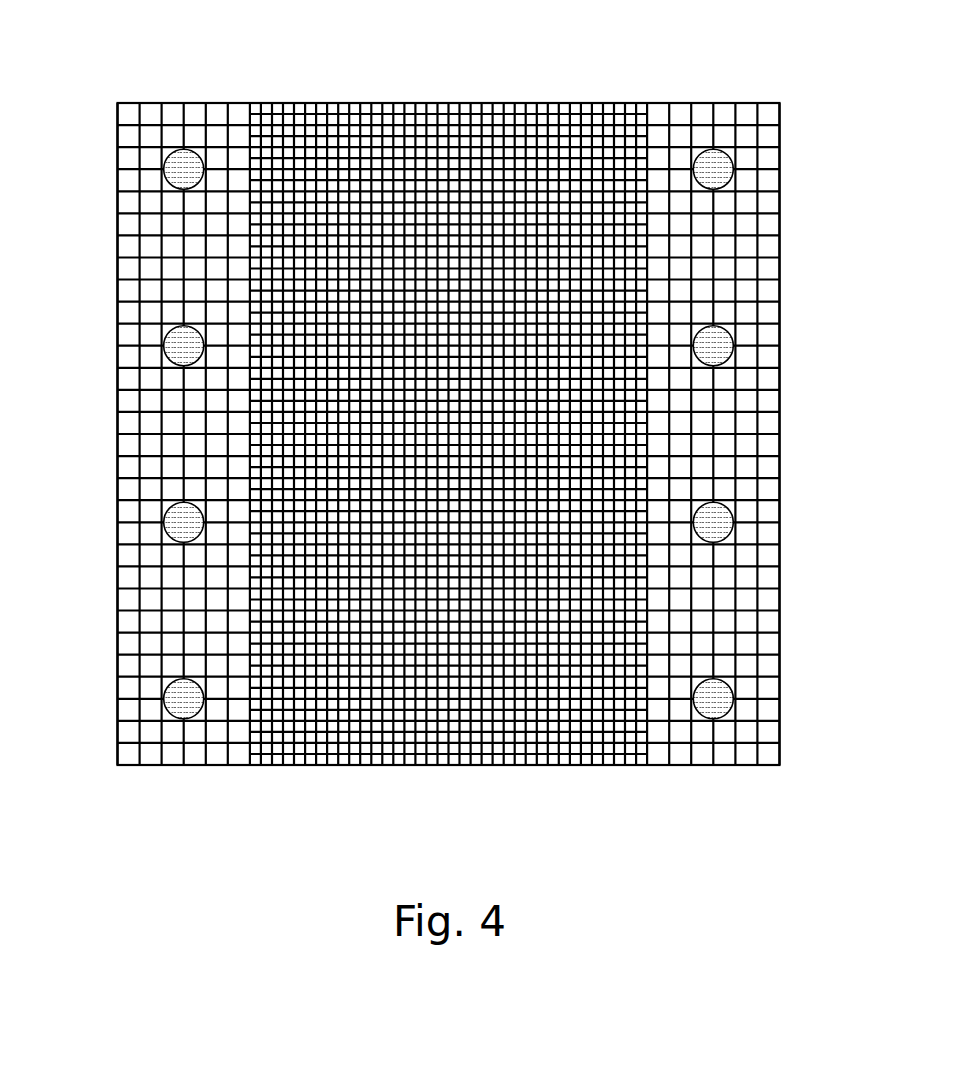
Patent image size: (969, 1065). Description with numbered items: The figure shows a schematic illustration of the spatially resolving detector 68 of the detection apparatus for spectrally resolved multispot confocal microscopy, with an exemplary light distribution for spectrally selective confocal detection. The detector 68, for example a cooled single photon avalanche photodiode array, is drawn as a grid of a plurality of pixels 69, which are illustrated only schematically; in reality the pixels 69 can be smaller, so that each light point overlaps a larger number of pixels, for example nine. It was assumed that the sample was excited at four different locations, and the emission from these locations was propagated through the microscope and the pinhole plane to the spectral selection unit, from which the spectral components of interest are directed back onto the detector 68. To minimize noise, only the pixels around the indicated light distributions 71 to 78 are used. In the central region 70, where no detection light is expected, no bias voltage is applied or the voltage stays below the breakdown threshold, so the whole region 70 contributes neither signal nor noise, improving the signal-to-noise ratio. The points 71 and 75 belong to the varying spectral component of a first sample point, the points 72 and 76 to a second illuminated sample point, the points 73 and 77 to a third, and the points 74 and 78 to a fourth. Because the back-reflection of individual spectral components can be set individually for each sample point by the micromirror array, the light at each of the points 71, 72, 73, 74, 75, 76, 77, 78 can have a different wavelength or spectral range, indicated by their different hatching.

The spatially resolving detector 68 is at (483, 791).
The pixels 69 is at (725, 118).
The central region 70 is at (352, 125).
The light distribution 71 is at (182, 170).
The light distribution 72 is at (182, 347).
The light distribution 73 is at (182, 524).
The light distribution 74 is at (182, 699).
The light distribution 75 is at (714, 169).
The light distribution 76 is at (714, 346).
The light distribution 77 is at (714, 522).
The light distribution 78 is at (714, 698).